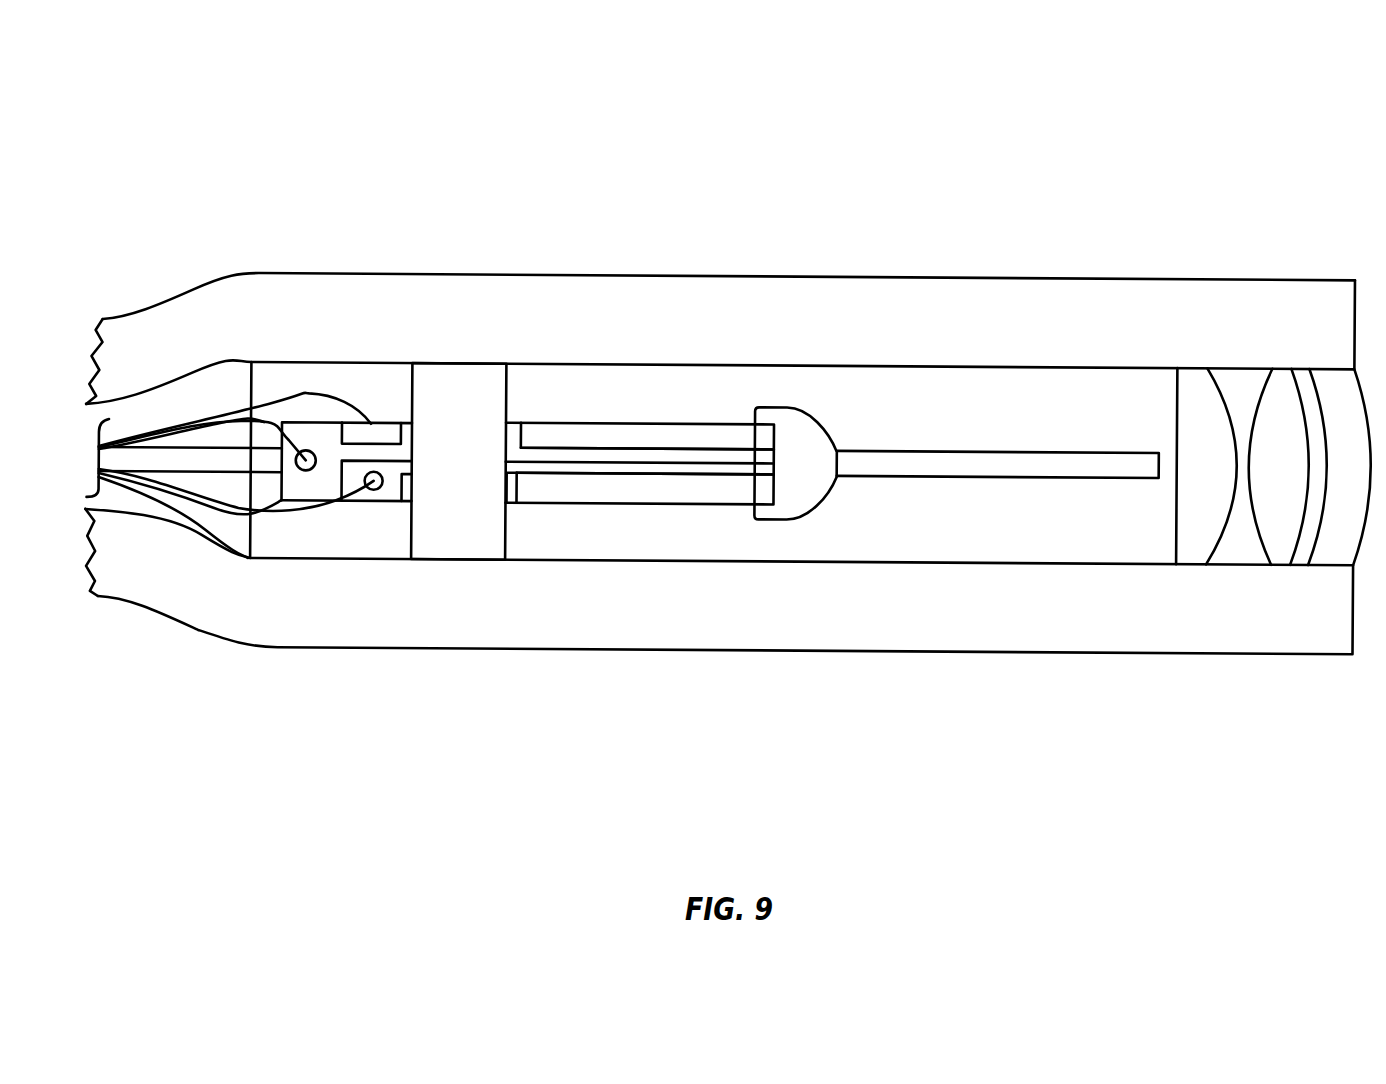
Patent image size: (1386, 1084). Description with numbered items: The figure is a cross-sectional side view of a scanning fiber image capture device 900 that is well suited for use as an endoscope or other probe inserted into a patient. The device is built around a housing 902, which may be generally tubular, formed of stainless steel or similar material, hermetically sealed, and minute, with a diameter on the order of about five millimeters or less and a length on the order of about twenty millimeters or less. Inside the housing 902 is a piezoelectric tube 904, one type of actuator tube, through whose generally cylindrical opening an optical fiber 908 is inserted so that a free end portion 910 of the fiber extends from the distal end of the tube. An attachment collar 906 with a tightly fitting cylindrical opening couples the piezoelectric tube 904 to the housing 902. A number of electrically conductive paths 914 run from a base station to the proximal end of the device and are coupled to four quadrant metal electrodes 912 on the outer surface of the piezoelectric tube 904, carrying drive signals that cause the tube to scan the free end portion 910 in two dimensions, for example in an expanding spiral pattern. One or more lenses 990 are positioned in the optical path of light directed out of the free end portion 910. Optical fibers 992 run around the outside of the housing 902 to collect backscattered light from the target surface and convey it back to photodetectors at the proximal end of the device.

The scanning fiber image capture device 900 is at (705, 483).
The housing 902 is at (357, 362).
The piezoelectric tube 904 is at (585, 402).
The attachment collar 906 is at (465, 362).
The optical fiber 908 is at (222, 473).
The free end portion 910 is at (1023, 492).
The quadrant metal electrodes 912 is at (698, 421).
The electrically conductive paths 914 is at (62, 498).
The lenses 990 is at (1223, 352).
The optical fibers 992 is at (1127, 280).